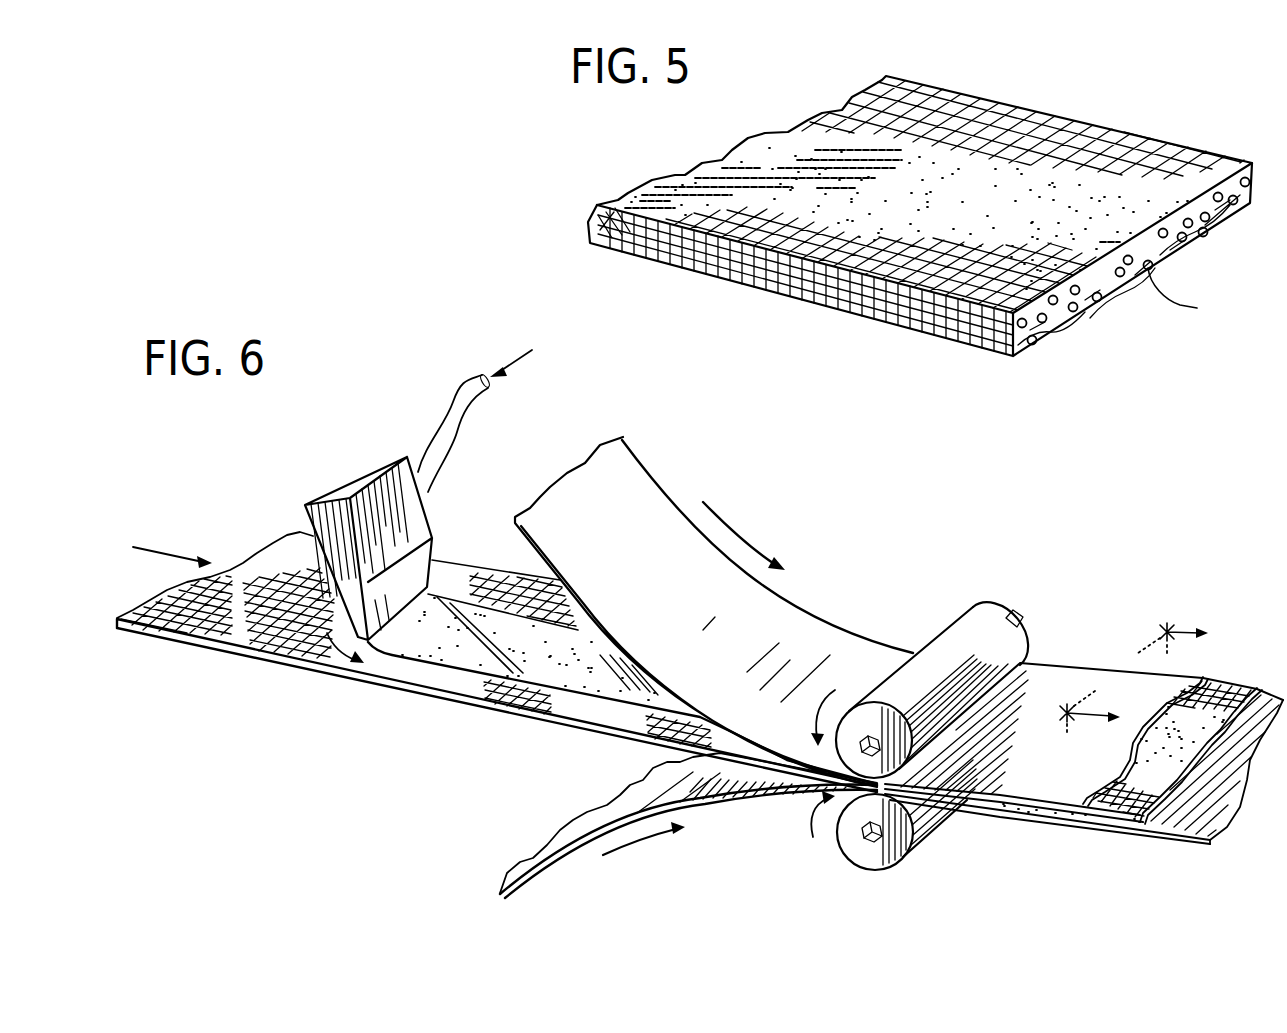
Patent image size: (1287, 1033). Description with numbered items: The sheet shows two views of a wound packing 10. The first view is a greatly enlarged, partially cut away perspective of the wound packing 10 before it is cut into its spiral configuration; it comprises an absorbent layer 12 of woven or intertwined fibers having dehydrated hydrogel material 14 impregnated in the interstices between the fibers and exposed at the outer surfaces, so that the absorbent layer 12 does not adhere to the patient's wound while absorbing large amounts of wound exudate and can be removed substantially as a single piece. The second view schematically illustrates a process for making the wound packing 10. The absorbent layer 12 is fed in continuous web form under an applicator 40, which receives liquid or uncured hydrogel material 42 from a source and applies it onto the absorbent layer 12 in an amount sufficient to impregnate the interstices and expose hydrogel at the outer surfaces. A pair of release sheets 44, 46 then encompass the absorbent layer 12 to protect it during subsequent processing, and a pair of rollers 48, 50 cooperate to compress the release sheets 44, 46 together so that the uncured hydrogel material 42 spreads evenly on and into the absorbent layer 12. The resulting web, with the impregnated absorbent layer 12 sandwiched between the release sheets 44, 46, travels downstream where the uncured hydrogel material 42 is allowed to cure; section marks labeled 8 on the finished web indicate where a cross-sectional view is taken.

In FIG. 5, the wound packing 10 is at (1036, 100).
In FIG. 5, the absorbent layer 12 is at (1107, 150).
In FIG. 6, the absorbent layer 12 is at (238, 610).
In FIG. 5, the dehydrated hydrogel material 14 is at (1098, 298).
In FIG. 6, the applicator 40 is at (357, 478).
In FIG. 6, the uncured hydrogel material 42 is at (437, 629).
In FIG. 6, the release sheet 44 is at (843, 647).
In FIG. 6, the release sheet 46 is at (703, 800).
In FIG. 6, the roller 48 is at (975, 633).
In FIG. 6, the roller 50 is at (898, 833).
In FIG. 6, the section line 8- 8 is at (1124, 672).